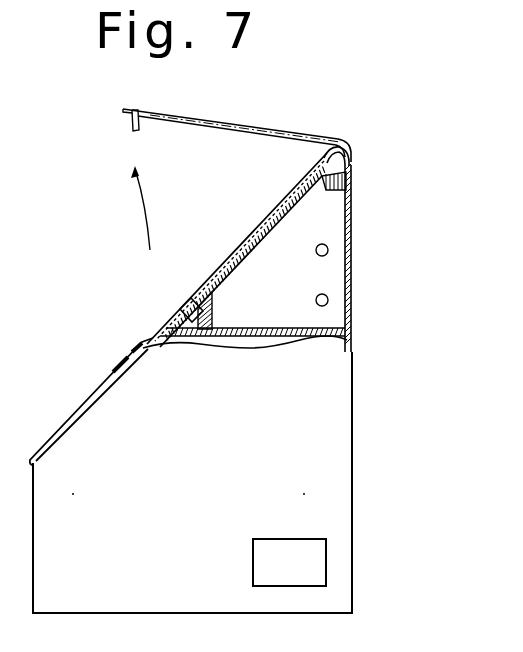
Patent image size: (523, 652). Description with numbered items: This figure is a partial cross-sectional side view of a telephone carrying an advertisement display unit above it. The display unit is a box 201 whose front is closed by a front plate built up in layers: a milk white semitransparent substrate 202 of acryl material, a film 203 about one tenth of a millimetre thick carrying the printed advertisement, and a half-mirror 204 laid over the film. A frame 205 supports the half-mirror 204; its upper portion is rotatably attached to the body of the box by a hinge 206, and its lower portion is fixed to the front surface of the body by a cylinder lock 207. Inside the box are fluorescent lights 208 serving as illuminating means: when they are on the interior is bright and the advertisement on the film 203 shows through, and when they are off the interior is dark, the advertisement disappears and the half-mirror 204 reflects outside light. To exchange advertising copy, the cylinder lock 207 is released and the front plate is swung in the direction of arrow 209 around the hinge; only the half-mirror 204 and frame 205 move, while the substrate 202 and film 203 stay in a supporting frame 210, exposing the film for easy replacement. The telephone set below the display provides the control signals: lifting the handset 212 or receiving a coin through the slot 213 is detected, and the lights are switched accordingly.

The box 201 is at (348, 217).
The semitransparent substrate 202 is at (205, 293).
The film 203 is at (243, 247).
The half-mirror 204 is at (258, 228).
The frame 205 is at (320, 157).
The hinge 206 is at (354, 160).
The cylinder lock 207 is at (182, 309).
The fluorescent lights 208 is at (329, 249).
The arrow 209 is at (140, 217).
The supporting frame 210 is at (323, 193).
The handset 212 is at (75, 408).
The slot 213 is at (121, 359).